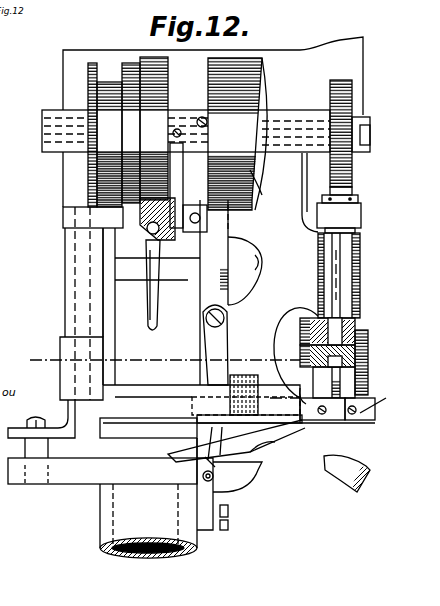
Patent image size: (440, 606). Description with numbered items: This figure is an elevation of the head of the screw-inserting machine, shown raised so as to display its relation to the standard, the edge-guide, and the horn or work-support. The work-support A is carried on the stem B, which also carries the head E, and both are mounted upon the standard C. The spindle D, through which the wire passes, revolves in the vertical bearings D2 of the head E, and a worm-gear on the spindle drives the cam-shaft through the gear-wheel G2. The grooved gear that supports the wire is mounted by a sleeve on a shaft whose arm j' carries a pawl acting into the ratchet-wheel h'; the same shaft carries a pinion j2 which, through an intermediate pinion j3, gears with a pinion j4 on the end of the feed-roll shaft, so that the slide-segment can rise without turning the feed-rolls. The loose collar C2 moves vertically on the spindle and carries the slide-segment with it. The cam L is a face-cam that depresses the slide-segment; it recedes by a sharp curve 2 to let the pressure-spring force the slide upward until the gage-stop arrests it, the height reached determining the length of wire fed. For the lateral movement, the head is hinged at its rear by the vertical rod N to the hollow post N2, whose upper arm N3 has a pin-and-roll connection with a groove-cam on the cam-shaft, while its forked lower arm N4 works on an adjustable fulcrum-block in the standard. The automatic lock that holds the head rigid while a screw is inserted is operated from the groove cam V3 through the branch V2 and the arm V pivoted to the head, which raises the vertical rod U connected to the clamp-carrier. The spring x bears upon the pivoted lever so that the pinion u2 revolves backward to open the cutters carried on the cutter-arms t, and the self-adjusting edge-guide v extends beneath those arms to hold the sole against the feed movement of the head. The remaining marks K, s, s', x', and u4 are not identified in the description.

The spindle D is at (109, 144).
The groove cam V3 is at (156, 104).
The branch V2 is at (183, 170).
The cam L is at (237, 134).
The sharp curve 2 is at (262, 178).
The gear-wheel G2 is at (350, 128).
The loose collar C2 is at (339, 214).
The vertical bearings D2 is at (360, 290).
The pinion j2 is at (368, 338).
The intermediate pinion j3 is at (368, 363).
The pinion j4 is at (368, 388).
The arm j' is at (325, 343).
The ratchet-wheel h' is at (296, 353).
The upper arm N3 is at (93, 217).
The vertical rod N is at (96, 312).
The hollow post N2 is at (65, 283).
The lower arm N4 is at (41, 419).
The arm V is at (149, 219).
The vertical rod U is at (145, 285).
The head E is at (262, 262).
The spring x is at (215, 345).
The ratchet x' is at (251, 377).
The center line K is at (163, 374).
The screw block s is at (322, 416).
The screw block s' is at (365, 415).
The cutter-arms t is at (297, 398).
The stem B is at (155, 449).
The standard C is at (156, 498).
The pinion u2 is at (232, 496).
The edge-guide v is at (236, 441).
The link u4 is at (217, 447).
The work-support A is at (370, 470).